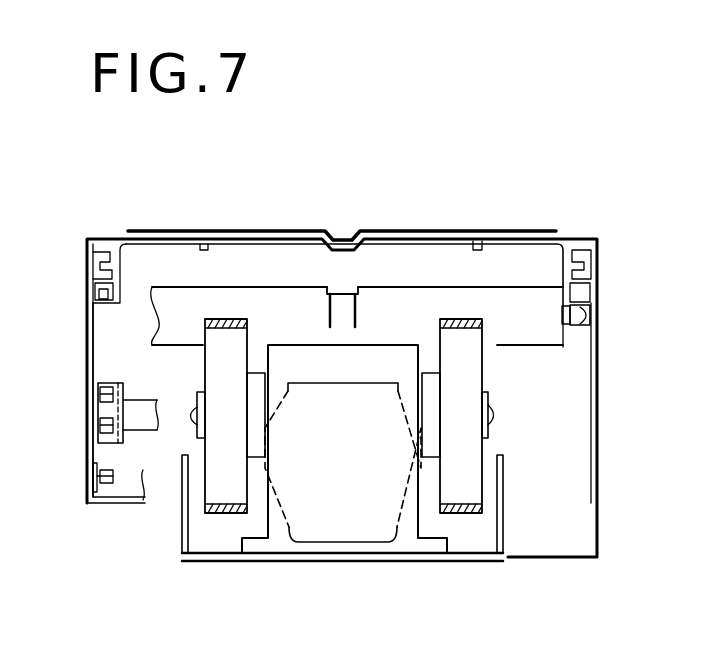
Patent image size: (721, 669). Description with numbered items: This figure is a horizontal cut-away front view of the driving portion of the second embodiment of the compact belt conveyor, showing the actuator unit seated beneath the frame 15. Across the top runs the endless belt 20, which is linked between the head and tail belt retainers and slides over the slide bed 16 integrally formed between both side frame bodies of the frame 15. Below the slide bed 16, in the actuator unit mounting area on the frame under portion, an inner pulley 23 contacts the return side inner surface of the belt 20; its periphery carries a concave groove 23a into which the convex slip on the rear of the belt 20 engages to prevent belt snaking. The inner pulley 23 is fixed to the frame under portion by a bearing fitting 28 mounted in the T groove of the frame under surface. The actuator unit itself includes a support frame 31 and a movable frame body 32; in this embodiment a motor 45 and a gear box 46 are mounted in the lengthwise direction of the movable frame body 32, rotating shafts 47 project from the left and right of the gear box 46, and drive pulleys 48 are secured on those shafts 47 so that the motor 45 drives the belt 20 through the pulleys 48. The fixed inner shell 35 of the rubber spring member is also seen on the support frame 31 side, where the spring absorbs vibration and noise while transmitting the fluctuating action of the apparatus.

The frame 15 is at (93, 238).
The endless belt 20 is at (498, 230).
The slide bed 16 is at (176, 244).
The inner pulley 23 is at (258, 292).
The concave groove 23a is at (347, 296).
The bearing fitting 28 is at (592, 317).
The support frame 31 is at (87, 353).
The inner shell 35 is at (136, 407).
The gear box 46 is at (373, 355).
The motor 45 is at (360, 527).
The rotating shaft 47 is at (495, 412).
The drive pulley 48 is at (216, 515).
The movable frame body 32 is at (182, 565).